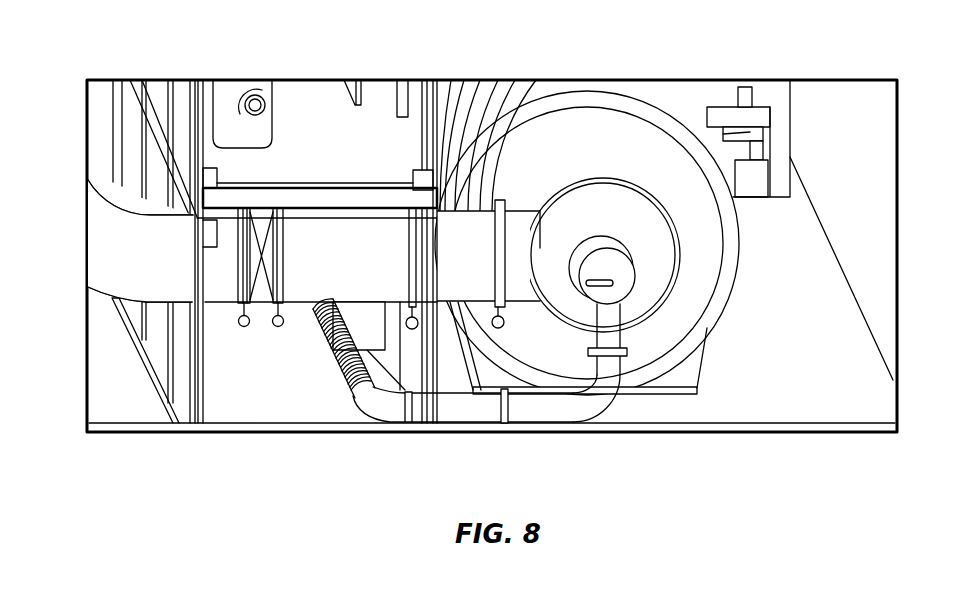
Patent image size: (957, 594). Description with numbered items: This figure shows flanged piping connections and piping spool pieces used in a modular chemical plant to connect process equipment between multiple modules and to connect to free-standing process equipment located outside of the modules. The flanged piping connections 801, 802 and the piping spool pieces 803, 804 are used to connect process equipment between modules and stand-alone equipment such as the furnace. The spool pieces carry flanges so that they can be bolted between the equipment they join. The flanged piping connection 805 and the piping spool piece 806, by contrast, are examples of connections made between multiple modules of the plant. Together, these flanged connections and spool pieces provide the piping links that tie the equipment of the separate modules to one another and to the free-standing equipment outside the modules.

The flanged piping connection 801 is at (404, 432).
The flanged piping connection 802 is at (492, 276).
The piping spool piece 803 is at (477, 411).
The piping spool piece 804 is at (473, 222).
The flanged piping connection 805 is at (241, 272).
The piping spool piece 806 is at (101, 236).